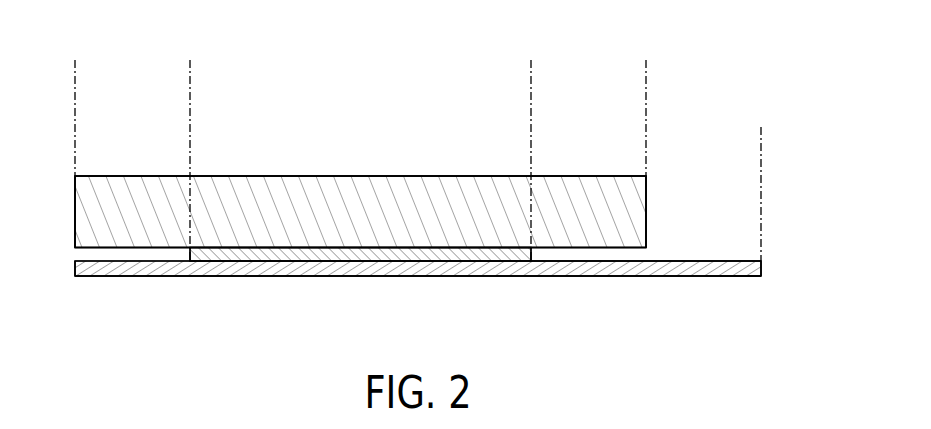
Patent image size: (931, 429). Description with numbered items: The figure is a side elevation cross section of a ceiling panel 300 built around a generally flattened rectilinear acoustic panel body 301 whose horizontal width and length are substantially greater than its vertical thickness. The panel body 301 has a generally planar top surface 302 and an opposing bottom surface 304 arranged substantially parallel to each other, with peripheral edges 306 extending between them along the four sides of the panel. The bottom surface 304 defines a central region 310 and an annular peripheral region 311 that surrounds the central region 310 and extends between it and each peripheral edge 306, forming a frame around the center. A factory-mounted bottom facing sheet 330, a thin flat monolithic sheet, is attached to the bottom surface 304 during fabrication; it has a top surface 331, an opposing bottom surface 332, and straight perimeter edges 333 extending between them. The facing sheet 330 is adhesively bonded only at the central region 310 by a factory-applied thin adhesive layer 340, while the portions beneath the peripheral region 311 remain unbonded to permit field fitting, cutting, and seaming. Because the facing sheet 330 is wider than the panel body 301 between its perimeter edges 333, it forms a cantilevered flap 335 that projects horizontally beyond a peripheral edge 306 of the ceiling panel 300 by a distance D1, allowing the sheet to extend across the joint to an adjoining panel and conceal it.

The ceiling panel 300 is at (715, 90).
The acoustic panel body 301 is at (368, 208).
The top surface 302 is at (230, 176).
The bottom surface 304 is at (114, 249).
The peripheral edges 306 is at (75, 223).
The central region 310 is at (531, 76).
The peripheral region 311 is at (190, 76).
The bottom facing sheet 330 is at (418, 276).
The top surface of facing sheet 331 is at (667, 258).
The bottom surface of facing sheet 332 is at (651, 279).
The perimeter edges 333 is at (75, 267).
The flap 335 is at (740, 273).
The adhesive layer 340 is at (267, 258).
The distance D1 is at (646, 144).